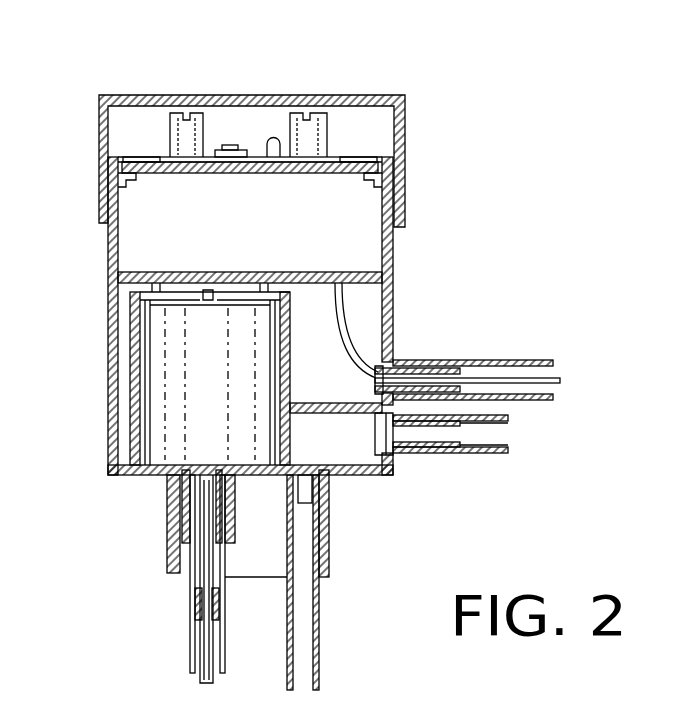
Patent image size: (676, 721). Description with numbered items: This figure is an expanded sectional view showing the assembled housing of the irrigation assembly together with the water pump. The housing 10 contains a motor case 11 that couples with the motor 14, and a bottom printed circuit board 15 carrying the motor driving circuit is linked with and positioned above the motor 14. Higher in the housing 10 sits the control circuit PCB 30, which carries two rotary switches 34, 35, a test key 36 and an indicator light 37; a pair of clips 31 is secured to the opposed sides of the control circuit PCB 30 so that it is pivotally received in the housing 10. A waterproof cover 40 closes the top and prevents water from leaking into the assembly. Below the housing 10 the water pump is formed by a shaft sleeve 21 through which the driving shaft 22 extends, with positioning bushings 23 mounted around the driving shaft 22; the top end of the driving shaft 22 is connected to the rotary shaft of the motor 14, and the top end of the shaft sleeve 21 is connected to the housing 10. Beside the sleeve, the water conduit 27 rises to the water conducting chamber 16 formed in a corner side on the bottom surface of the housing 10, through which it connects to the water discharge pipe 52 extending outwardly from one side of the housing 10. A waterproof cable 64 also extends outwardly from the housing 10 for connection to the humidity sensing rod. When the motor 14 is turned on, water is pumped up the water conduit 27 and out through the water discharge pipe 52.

The housing 10 is at (110, 255).
The motor case 11 is at (133, 318).
The motor 14 is at (150, 372).
The bottom printed circuit board 15 is at (350, 281).
The water conducting chamber 16 is at (345, 462).
The shaft sleeve 21 is at (190, 640).
The driving shaft 22 is at (208, 658).
The positioning bushings 23 is at (192, 605).
The water conduit 27 is at (318, 605).
The control circuit PCB 30 is at (252, 173).
The clips 31 is at (103, 170).
The rotary switch 34 is at (328, 117).
The rotary switch 35 is at (178, 120).
The test key 36 is at (237, 148).
The indicator light 37 is at (279, 145).
The waterproof cover 40 is at (388, 97).
The water discharge pipe 52 is at (490, 448).
The waterproof cable 64 is at (510, 362).